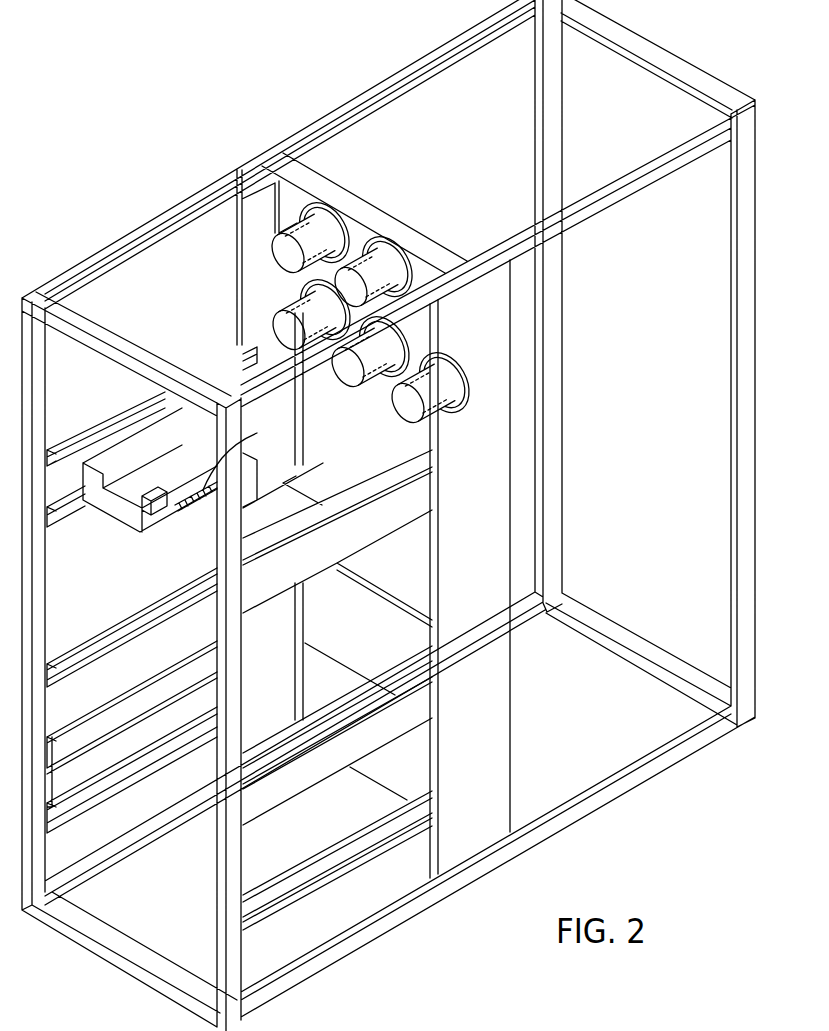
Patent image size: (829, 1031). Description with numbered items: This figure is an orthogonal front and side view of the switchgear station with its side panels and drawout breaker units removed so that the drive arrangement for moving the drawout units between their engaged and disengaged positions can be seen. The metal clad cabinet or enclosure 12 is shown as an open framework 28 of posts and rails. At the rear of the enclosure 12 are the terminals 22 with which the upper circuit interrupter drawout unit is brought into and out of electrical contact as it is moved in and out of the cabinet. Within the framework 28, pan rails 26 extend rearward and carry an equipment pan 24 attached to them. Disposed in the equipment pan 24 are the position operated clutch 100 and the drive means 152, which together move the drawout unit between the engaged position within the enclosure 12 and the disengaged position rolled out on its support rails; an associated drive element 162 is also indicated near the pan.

The metal cabinet or enclosure 12 is at (294, 97).
The terminals 22 is at (284, 331).
The equipment pan 24 is at (282, 478).
The pan rails 26 is at (62, 528).
The framework 28 is at (485, 298).
The position operated clutch 100 is at (148, 516).
The drive means 152 is at (180, 500).
The chain link 162 is at (245, 439).